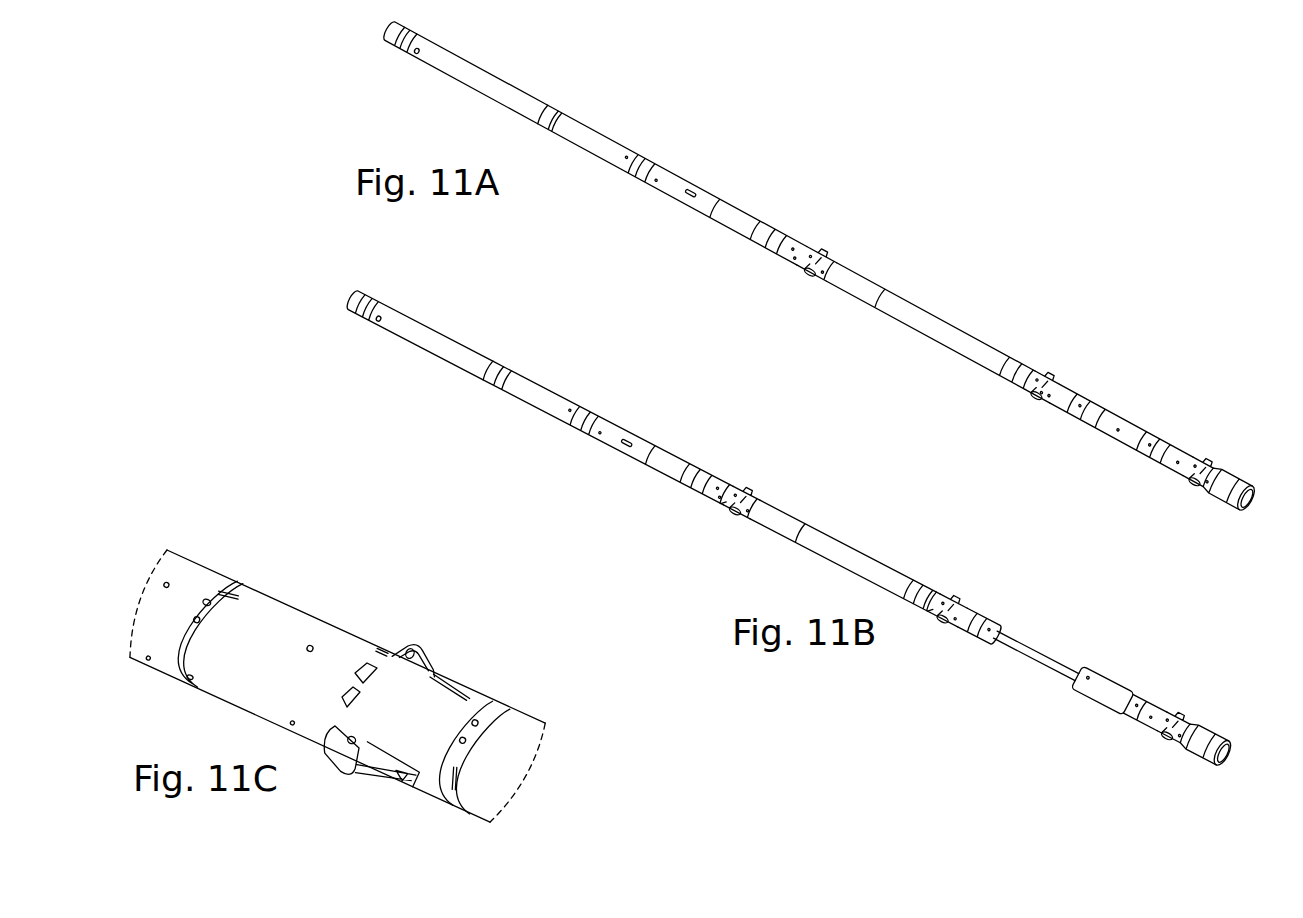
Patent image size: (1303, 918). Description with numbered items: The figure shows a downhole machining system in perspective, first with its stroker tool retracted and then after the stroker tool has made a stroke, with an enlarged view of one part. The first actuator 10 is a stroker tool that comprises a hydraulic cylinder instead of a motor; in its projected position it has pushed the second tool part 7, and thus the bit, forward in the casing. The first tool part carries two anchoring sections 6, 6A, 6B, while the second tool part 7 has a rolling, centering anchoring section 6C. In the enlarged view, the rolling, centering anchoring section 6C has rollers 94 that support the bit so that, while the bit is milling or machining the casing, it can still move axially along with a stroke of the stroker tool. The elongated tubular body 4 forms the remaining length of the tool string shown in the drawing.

In FIG. 11A, the first tube segment 4 is at (617, 155).
In FIG. 11B, the first tube segment 4 is at (628, 447).
In FIG. 11B, the anchoring section 6 is at (737, 487).
In FIG. 11A, the anchoring section 6A is at (817, 255).
In FIG. 11B, the anchoring section 6A is at (753, 497).
In FIG. 11A, the anchoring section 6B is at (1048, 373).
In FIG. 11B, the anchoring section 6B is at (962, 605).
In FIG. 11A, the rolling, centering anchoring section 6C is at (1218, 467).
In FIG. 11B, the rolling, centering anchoring section 6C is at (1190, 725).
In FIG. 11C, the rolling, centering anchoring section 6C is at (440, 666).
In FIG. 11A, the second tool part 7 is at (1182, 450).
In FIG. 11B, the second tool part 7 is at (1165, 715).
In FIG. 11C, the second tool part 7 is at (293, 622).
In FIG. 11A, the first actuator 10 is at (948, 328).
In FIG. 11B, the first actuator 10 is at (873, 570).
In FIG. 11C, the rollers 94 is at (417, 640).